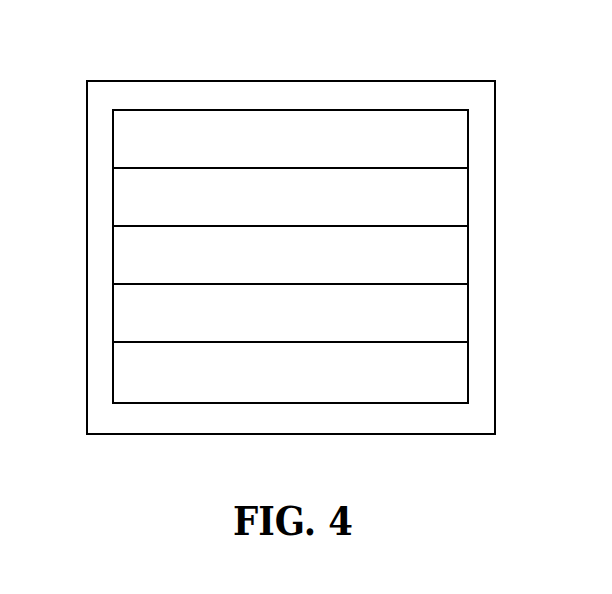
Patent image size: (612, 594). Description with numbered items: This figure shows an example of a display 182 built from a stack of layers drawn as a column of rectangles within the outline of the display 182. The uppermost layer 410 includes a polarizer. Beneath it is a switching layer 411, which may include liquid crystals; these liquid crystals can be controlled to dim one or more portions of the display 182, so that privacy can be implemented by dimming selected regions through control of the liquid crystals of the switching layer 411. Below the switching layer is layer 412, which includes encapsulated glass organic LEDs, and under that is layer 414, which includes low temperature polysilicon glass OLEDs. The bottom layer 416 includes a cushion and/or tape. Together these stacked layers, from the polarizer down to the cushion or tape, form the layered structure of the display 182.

The display 182 is at (290, 80).
The layer 410 is at (113, 140).
The switching layer 411 is at (113, 197).
The layer 412 is at (113, 255).
The layer 414 is at (113, 313).
The layer 416 is at (113, 372).